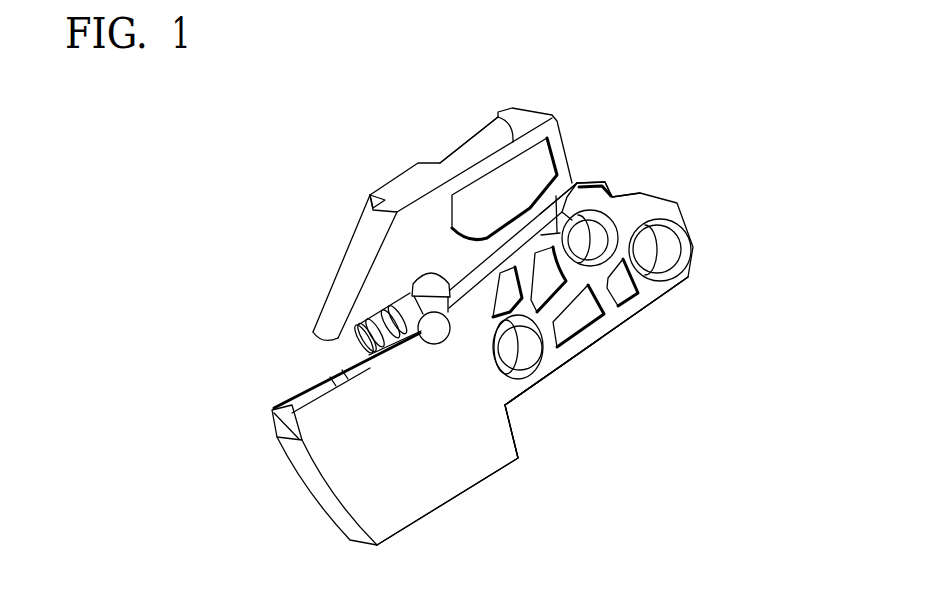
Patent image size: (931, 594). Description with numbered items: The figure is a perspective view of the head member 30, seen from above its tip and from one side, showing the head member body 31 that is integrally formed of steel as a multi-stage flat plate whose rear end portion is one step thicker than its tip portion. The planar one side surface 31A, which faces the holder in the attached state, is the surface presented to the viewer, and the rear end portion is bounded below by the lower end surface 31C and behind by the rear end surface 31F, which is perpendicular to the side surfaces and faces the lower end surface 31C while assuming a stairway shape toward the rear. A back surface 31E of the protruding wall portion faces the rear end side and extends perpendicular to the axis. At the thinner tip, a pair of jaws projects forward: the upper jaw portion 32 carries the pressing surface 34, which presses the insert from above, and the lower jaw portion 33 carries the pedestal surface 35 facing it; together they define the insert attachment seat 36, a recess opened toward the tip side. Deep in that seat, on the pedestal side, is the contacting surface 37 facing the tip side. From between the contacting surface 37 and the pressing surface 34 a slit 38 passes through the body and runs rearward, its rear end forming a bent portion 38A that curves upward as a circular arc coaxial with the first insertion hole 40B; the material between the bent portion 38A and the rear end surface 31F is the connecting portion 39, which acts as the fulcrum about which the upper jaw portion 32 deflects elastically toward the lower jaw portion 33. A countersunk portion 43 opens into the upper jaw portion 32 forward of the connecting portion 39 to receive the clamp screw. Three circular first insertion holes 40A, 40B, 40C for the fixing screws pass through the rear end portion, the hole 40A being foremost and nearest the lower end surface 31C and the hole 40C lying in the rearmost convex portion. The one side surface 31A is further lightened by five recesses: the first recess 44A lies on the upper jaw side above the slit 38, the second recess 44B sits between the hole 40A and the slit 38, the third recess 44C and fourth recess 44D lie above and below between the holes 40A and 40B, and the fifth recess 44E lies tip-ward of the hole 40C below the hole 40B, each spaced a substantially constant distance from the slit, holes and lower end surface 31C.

The head member 30 is at (585, 82).
The head member body 31 is at (403, 186).
The one side surface 31A is at (658, 292).
The lower end surface 31C is at (552, 380).
The back surface 31E is at (513, 431).
The rear end surface 31F is at (620, 176).
The upper jaw portion 32 is at (348, 270).
The lower jaw portion 33 is at (427, 485).
The pressing surface 34 is at (325, 341).
The pedestal surface 35 is at (293, 402).
The insert attachment seat 36 is at (365, 386).
The contacting surface 37 is at (417, 332).
The slit 38 is at (512, 247).
The bent portion 38A is at (573, 183).
The connecting portion 39 is at (560, 168).
The first insertion hole 40A is at (507, 361).
The first insertion hole 40B is at (603, 240).
The first insertion hole 40C is at (672, 250).
The countersunk portion 43 is at (478, 144).
The first recess 44A is at (540, 162).
The second recess 44B is at (497, 297).
The third recess 44C is at (548, 287).
The fourth recess 44D is at (570, 325).
The fifth recess 44E is at (626, 293).